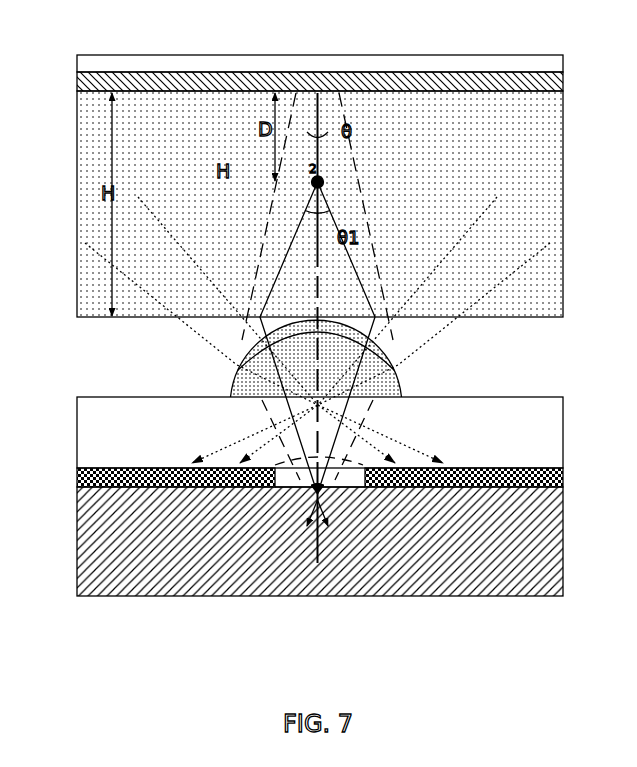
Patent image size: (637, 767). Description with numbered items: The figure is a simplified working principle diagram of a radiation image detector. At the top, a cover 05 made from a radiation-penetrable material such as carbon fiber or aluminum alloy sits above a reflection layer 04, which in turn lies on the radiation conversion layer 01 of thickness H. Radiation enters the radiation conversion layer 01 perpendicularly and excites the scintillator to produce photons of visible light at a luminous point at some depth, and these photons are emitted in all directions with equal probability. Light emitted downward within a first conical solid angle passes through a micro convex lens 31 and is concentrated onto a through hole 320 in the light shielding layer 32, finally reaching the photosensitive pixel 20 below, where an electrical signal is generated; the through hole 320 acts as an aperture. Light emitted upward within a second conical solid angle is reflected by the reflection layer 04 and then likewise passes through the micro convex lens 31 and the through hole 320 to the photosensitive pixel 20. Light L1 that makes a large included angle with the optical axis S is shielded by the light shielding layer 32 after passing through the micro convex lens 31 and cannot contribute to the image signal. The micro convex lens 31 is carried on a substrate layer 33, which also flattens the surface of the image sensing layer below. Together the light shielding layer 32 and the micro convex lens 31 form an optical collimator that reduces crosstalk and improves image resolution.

The radiation conversion layer 01 is at (447, 120).
The reflection layer 04 is at (373, 82).
The cover 05 is at (498, 72).
The micro convex lens 31 is at (380, 348).
The light shielding layer 32 is at (482, 477).
The substrate layer 33 is at (477, 440).
The photosensitive pixel 20 is at (107, 540).
The through hole 320 is at (343, 492).
The light having a large included angle with the optical axis L1 is at (430, 285).
The optical axis S is at (237, 366).